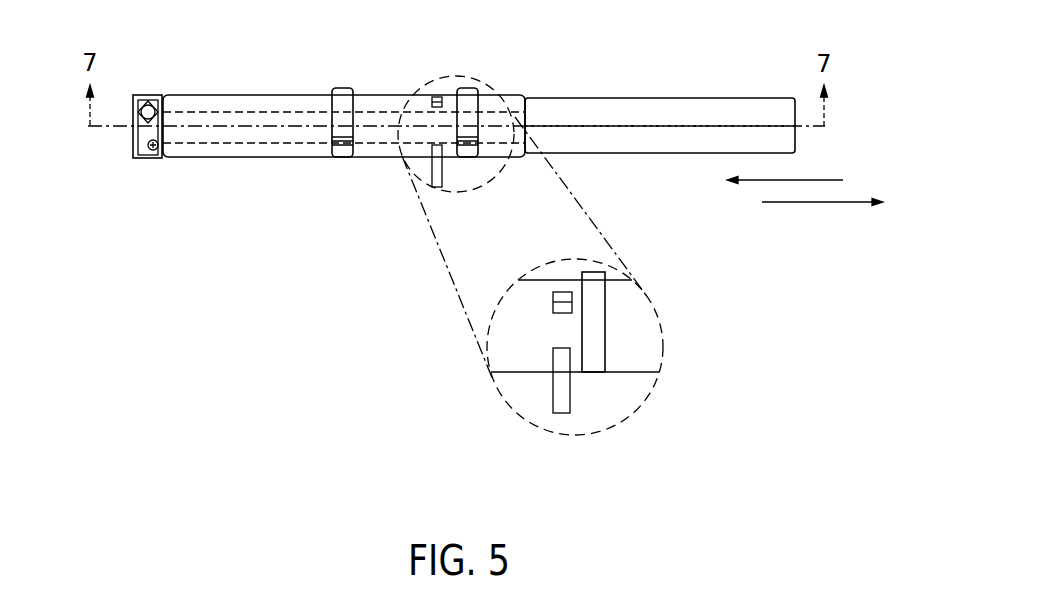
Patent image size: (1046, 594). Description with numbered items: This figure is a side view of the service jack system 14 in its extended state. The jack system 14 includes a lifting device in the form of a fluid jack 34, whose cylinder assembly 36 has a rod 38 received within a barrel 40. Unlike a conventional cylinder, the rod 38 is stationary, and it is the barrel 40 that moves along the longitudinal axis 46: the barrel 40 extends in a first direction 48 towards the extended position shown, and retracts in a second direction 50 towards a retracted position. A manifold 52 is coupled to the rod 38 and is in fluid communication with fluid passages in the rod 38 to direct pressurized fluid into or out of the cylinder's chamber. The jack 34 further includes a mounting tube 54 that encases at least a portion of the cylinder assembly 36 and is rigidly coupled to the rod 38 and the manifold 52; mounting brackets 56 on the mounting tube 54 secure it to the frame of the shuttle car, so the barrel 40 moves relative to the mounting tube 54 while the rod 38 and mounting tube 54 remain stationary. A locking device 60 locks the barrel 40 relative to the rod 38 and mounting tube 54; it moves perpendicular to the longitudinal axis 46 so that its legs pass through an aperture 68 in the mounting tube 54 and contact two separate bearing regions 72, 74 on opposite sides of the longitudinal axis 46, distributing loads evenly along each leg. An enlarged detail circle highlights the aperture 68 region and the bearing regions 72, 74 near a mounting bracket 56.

The jack system 14 is at (88, 172).
The fluid jack 34 is at (290, 108).
The cylinder assembly 36 is at (550, 90).
The rod 38 is at (207, 145).
The barrel 40 is at (648, 98).
The longitudinal axis 46 is at (712, 125).
The first direction 48 is at (846, 178).
The second direction 50 is at (762, 204).
The manifold 52 is at (147, 95).
The mounting tube 54 is at (293, 158).
The mounting brackets 56 is at (345, 96).
The locking device 60 is at (425, 198).
The aperture 68 is at (438, 143).
The bearing region 72 is at (570, 363).
The bearing region 74 is at (574, 300).